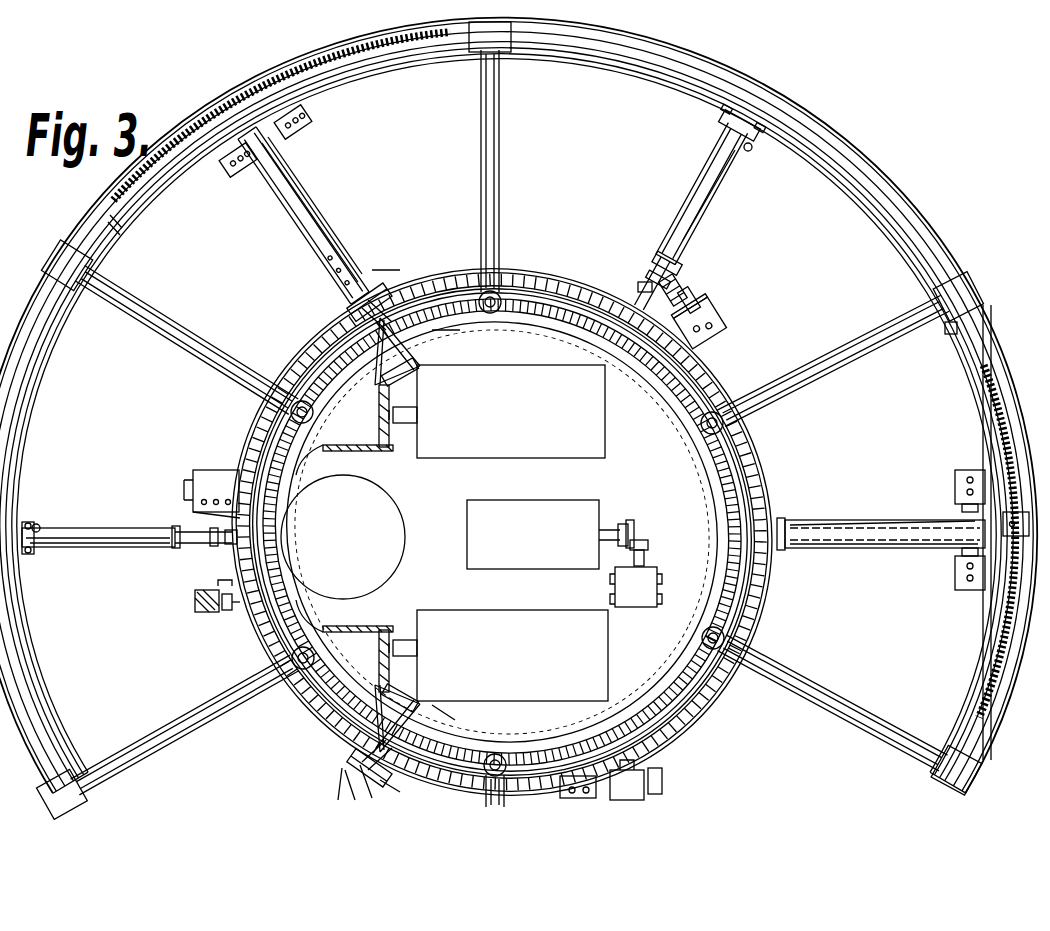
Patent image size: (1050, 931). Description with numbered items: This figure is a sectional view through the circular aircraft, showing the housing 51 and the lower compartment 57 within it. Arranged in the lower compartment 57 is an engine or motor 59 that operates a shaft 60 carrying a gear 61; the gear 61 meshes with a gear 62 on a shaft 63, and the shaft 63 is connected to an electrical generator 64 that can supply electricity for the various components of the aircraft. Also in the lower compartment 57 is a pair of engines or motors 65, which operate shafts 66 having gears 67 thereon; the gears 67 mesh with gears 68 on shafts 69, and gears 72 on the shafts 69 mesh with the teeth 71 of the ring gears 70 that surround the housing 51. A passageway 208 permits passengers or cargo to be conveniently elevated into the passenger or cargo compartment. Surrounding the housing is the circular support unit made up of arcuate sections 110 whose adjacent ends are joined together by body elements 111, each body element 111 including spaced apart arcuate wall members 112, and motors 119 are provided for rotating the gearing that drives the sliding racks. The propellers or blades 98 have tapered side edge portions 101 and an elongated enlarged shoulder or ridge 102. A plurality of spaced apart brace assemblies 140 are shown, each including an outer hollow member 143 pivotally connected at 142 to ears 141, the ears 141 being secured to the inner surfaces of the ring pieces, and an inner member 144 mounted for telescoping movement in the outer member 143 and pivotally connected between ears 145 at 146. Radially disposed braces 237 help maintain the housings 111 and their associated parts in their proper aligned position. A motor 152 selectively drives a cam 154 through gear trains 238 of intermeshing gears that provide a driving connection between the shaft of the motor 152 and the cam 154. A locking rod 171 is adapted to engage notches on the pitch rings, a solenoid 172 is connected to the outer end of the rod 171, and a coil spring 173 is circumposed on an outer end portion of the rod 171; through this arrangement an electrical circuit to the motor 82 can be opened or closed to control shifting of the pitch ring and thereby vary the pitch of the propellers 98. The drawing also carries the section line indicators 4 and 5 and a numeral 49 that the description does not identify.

The arcuate sections 110 is at (712, 72).
The body elements 111 is at (66, 256).
The arcuate wall members 112 is at (95, 215).
The motors 119 is at (310, 122).
The tapered side edge portions 101 is at (306, 192).
The shoulder or ridge 102 is at (318, 198).
The propellers 98 is at (276, 221).
The radially disposed braces 237 is at (220, 300).
The section line 4- 4 is at (416, 326).
The section line 5- 5 is at (455, 719).
The gears 72 is at (388, 292).
The shafts 69 is at (362, 312).
The gears 68 is at (428, 372).
The gears 67 is at (378, 412).
The shafts 66 is at (416, 420).
The engines or motors 65 is at (536, 370).
The lower compartment 57 is at (533, 521).
The engine or motor 59 is at (540, 512).
The shaft 60 is at (612, 526).
The gear 61 is at (636, 530).
The gear 62 is at (650, 544).
The shaft 63 is at (650, 556).
The electrical generator 64 is at (652, 584).
The teeth 71 is at (538, 270).
The ring gears 70 is at (562, 281).
The housing 51 is at (583, 730).
The ears 141 is at (722, 128).
The pivotal connection 142 is at (752, 152).
The brace assemblies 140 is at (683, 216).
The outer hollow members 143 is at (708, 205).
The inner members 144 is at (660, 258).
The ears 145 is at (652, 276).
The pivotal connection 146 is at (636, 284).
The cam 154 is at (688, 282).
The gear trains 238 is at (696, 294).
The motor 152 is at (722, 326).
The motor 82 is at (226, 484).
The solenoid 172 is at (200, 608).
The locking rod 171 is at (226, 610).
The coil spring 173 is at (206, 628).
The passageway 208 is at (343, 537).
The partition wall 49 is at (292, 636).